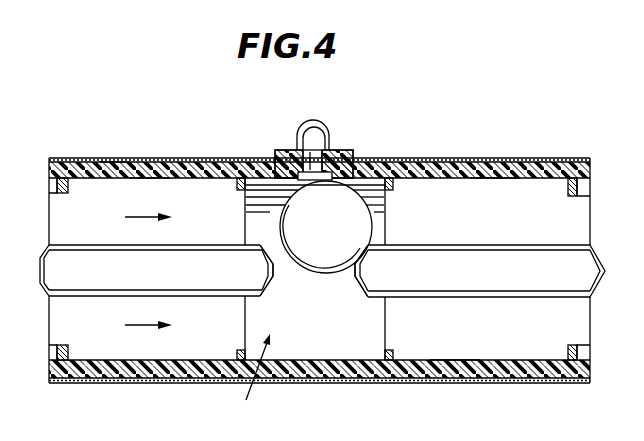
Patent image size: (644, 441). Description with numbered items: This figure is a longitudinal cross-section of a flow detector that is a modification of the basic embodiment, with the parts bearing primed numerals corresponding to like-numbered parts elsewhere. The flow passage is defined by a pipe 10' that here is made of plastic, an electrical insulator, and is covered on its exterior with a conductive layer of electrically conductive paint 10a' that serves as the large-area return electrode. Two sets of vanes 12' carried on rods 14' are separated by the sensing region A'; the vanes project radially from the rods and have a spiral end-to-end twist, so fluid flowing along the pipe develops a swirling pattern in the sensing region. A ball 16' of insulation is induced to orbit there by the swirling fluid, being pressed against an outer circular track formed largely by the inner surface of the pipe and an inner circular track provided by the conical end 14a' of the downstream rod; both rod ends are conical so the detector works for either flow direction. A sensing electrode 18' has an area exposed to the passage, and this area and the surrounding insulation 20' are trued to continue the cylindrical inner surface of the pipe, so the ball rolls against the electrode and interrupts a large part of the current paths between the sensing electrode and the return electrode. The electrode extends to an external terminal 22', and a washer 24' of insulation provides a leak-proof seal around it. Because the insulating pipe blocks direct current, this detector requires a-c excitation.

The pipe 10' is at (319, 252).
The electrically conductive paint 10a' is at (124, 132).
The vanes 12' is at (325, 271).
The rods 14' is at (322, 255).
The conical end 14a' is at (314, 286).
The ball 16' is at (337, 269).
The sensing electrode 18' is at (326, 226).
The insulation 20' is at (338, 140).
The external terminal 22' is at (311, 119).
The washer 24' is at (298, 146).
The sensing region A' is at (258, 376).